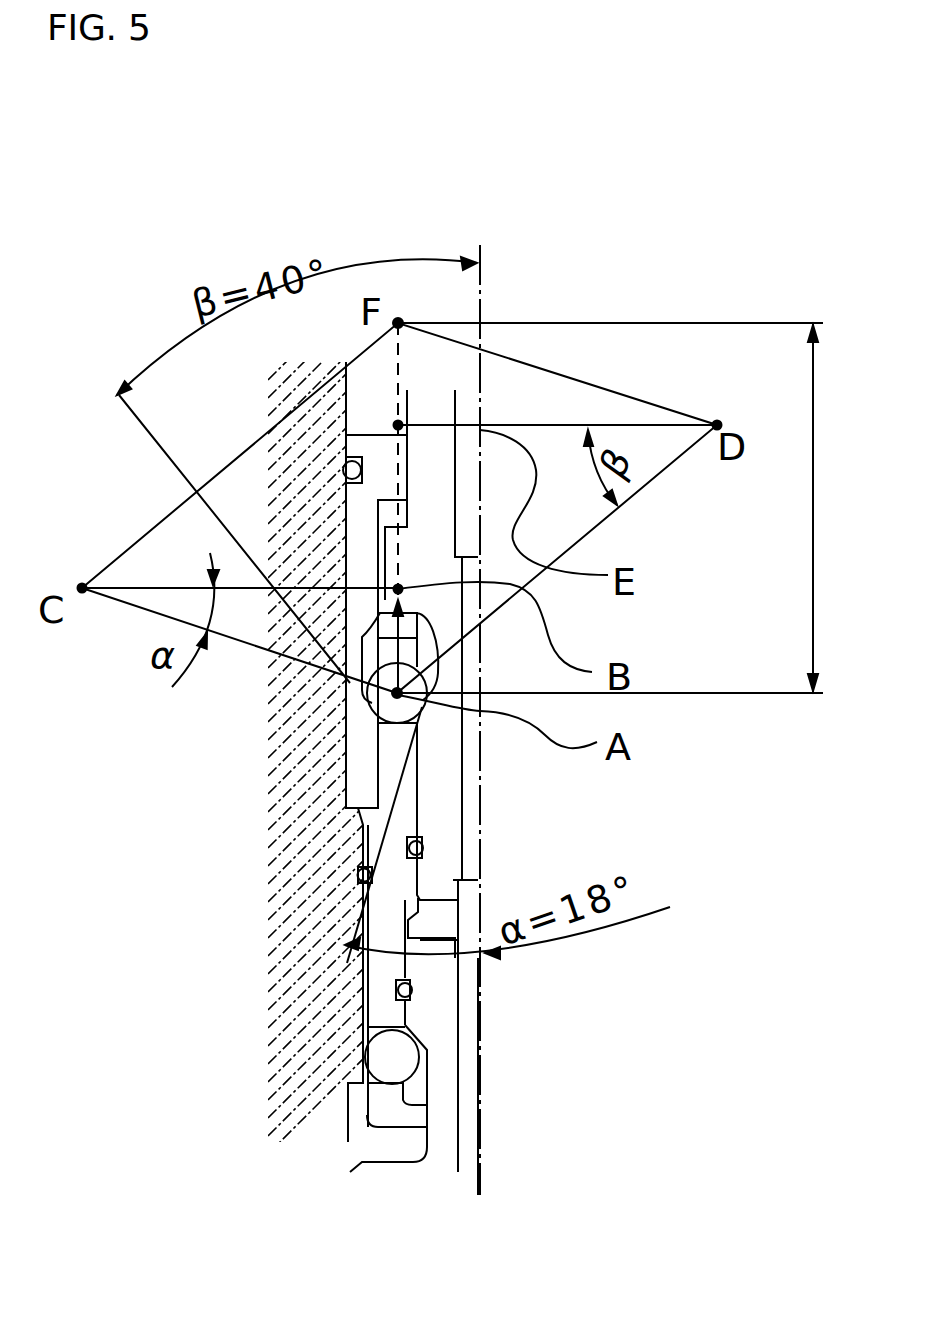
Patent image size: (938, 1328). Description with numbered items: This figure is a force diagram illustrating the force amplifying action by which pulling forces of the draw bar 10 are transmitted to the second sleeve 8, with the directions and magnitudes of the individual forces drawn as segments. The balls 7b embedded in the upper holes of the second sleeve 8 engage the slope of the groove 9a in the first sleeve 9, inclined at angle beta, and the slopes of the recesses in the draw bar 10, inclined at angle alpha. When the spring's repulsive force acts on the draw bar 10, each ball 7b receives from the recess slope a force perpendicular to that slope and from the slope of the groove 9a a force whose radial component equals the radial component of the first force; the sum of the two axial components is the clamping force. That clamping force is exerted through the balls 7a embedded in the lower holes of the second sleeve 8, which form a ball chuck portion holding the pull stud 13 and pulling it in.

The balls 7a is at (380, 1058).
The balls 7b is at (357, 727).
The second sleeve 8 is at (407, 813).
The first sleeve 9 is at (362, 797).
The groove 9a is at (372, 702).
The draw bar 10 is at (445, 867).
The pull stud 13 is at (440, 1000).